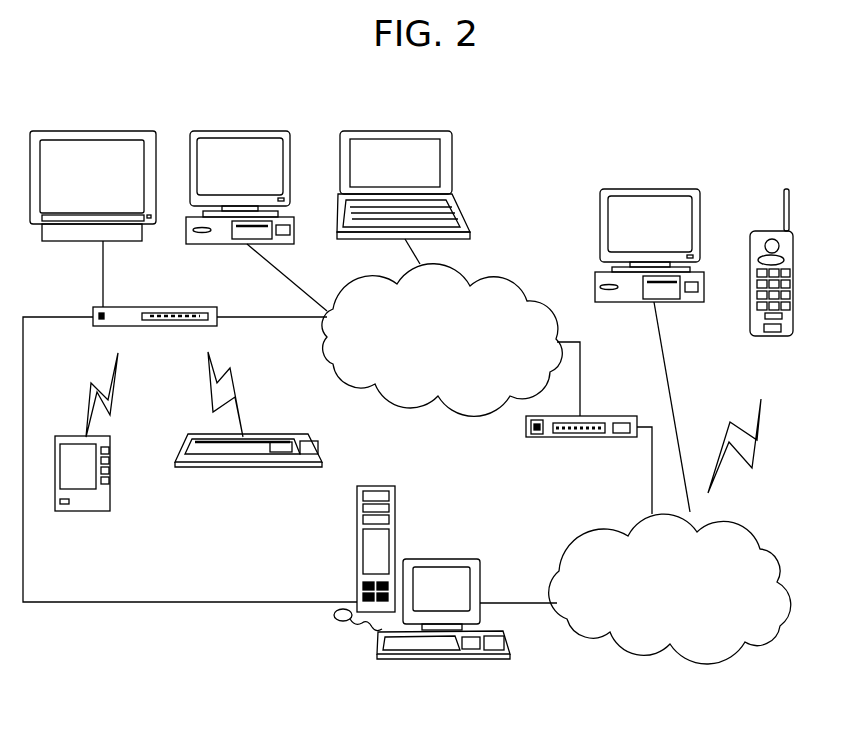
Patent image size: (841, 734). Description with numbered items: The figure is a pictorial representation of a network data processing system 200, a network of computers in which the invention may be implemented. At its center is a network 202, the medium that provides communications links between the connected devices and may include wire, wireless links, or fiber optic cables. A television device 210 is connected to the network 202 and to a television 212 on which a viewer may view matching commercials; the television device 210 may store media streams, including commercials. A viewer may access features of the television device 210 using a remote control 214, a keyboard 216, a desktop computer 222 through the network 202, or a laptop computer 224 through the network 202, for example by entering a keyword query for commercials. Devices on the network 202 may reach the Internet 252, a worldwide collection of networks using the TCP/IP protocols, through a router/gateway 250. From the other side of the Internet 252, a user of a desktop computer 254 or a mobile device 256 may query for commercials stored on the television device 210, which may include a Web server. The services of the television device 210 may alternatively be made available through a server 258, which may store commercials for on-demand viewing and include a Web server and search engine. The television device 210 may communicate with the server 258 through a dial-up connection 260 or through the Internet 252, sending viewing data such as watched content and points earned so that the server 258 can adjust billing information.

The network data processing system 200 is at (558, 110).
The network 202 is at (458, 375).
The television device 210 is at (156, 306).
The television 212 is at (167, 125).
The remote control 214 is at (111, 477).
The keyboard 216 is at (262, 436).
The desktop computer 222 is at (291, 143).
The laptop computer 224 is at (450, 138).
The router/gateway 250 is at (592, 415).
The Internet 252 is at (690, 625).
The desktop computer 254 is at (600, 216).
The mobile device 256 is at (757, 232).
The server 258 is at (440, 561).
The dial-up connection 260 is at (40, 318).